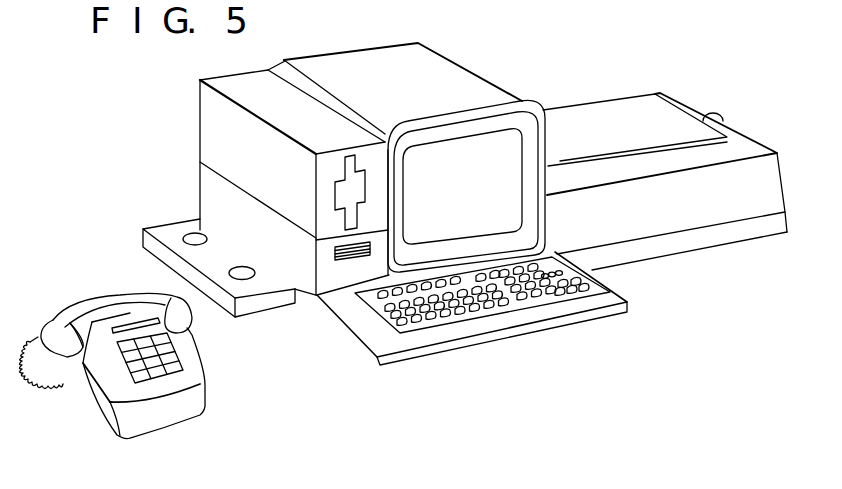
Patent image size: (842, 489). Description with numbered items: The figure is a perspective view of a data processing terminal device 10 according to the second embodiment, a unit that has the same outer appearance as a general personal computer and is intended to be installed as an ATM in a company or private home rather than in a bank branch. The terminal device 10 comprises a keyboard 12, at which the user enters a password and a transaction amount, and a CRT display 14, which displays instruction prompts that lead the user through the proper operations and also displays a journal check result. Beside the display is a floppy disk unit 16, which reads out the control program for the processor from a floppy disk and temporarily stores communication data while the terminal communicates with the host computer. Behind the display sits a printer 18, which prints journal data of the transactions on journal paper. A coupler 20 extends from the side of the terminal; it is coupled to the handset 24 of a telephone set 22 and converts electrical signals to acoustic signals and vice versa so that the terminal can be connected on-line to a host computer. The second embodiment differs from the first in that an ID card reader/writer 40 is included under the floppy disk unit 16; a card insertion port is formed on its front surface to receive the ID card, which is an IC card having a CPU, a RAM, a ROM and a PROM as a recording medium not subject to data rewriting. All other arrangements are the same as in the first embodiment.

The terminal device 10 is at (497, 76).
The keyboard 12 is at (563, 292).
The CRT display 14 is at (505, 156).
The floppy disk unit 16 is at (200, 123).
The printer 18 is at (630, 107).
The coupler 20 is at (162, 228).
The telephone set 22 is at (183, 418).
The handset 24 is at (90, 305).
The ID card reader/writer 40 is at (323, 282).